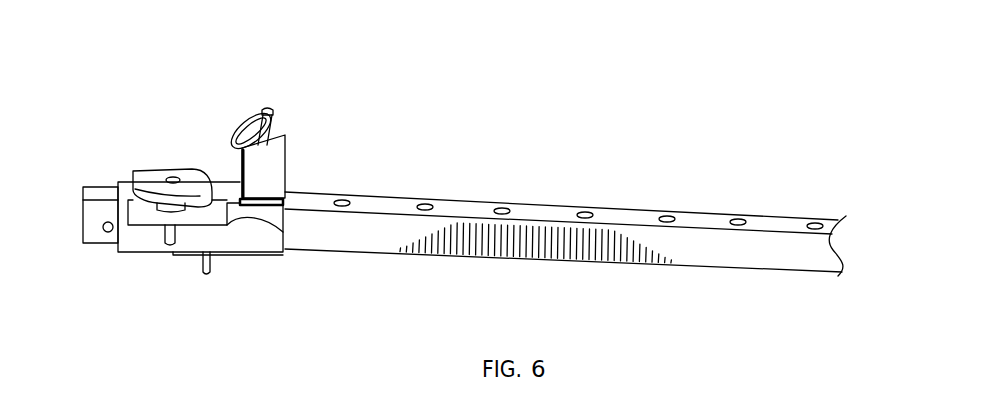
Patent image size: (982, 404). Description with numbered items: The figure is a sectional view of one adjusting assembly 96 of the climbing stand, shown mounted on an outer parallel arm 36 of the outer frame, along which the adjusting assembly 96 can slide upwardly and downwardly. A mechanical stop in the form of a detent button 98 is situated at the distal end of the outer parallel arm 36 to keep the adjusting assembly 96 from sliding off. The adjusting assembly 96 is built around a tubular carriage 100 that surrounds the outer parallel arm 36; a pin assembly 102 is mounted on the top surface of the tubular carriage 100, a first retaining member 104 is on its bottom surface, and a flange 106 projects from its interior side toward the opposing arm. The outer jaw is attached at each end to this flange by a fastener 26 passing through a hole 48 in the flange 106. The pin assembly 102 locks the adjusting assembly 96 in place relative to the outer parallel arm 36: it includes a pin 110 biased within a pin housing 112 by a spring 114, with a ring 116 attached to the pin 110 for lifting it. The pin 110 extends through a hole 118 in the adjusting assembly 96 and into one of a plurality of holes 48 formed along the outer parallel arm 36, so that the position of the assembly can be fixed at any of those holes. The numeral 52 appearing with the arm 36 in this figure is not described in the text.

The fastener 26 is at (152, 170).
The outer parallel arm 36 is at (565, 200).
The rail / guide bar 52 is at (763, 220).
The hole 48 is at (424, 203).
The adjusting assembly 96 is at (247, 254).
The detent button 98 is at (83, 218).
The tubular carriage 100 is at (142, 245).
The pin assembly 102 is at (282, 113).
The first retaining member 104 is at (212, 268).
The flange 106 is at (283, 232).
The pin 110 is at (268, 106).
The pin housing 112 is at (270, 175).
The spring 114 is at (302, 144).
The ring 116 is at (235, 138).
The hole 118 is at (302, 183).